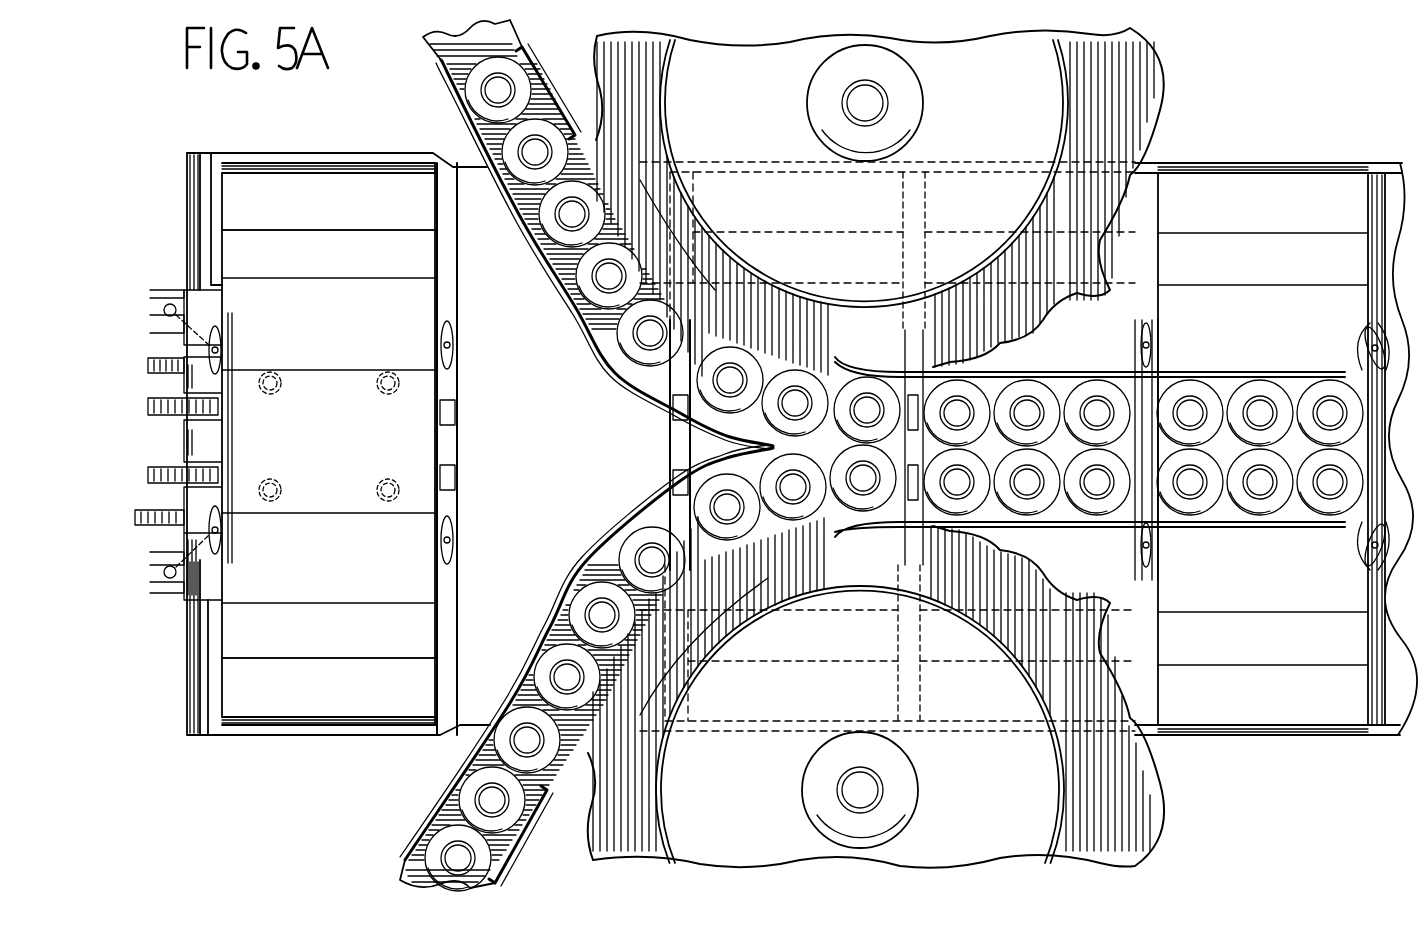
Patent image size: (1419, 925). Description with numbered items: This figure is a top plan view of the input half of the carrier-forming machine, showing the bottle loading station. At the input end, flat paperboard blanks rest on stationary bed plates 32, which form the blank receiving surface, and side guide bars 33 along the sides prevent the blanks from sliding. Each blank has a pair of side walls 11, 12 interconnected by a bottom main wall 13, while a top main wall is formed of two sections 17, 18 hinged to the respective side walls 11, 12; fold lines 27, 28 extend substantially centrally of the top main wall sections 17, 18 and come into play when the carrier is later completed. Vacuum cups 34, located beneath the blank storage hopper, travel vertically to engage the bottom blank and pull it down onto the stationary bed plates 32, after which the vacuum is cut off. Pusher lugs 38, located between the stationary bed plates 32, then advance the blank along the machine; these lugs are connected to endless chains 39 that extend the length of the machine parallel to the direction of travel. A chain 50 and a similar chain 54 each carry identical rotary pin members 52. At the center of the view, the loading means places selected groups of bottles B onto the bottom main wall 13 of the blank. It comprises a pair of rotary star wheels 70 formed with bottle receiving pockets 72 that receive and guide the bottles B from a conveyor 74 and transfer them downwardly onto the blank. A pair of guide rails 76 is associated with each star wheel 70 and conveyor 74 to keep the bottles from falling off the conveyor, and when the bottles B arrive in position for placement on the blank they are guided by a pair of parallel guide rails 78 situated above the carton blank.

The side wall 11 is at (348, 342).
The side wall 12 is at (350, 584).
The bottom main wall 13 is at (350, 462).
The top main wall section 17 is at (348, 212).
The top main wall section 18 is at (348, 704).
The fold line 27 is at (374, 230).
The fold line 28 is at (332, 658).
The stationary bed plates 32 is at (200, 245).
The side guide bars 33 is at (320, 160).
The vacuum cups 34 is at (378, 392).
The pusher lugs 38 is at (457, 480).
The endless chains 39 is at (150, 476).
The chain 50 is at (140, 522).
The rotary pin members 52 is at (222, 345).
The chain 54 is at (150, 360).
The rotary star wheels 70 is at (1035, 112).
The bottle receiving pockets 72 is at (595, 108).
The conveyor 74 is at (450, 45).
The guide rails 76 is at (540, 70).
The parallel guide rails 78 is at (1058, 372).
The bottles B is at (533, 150).